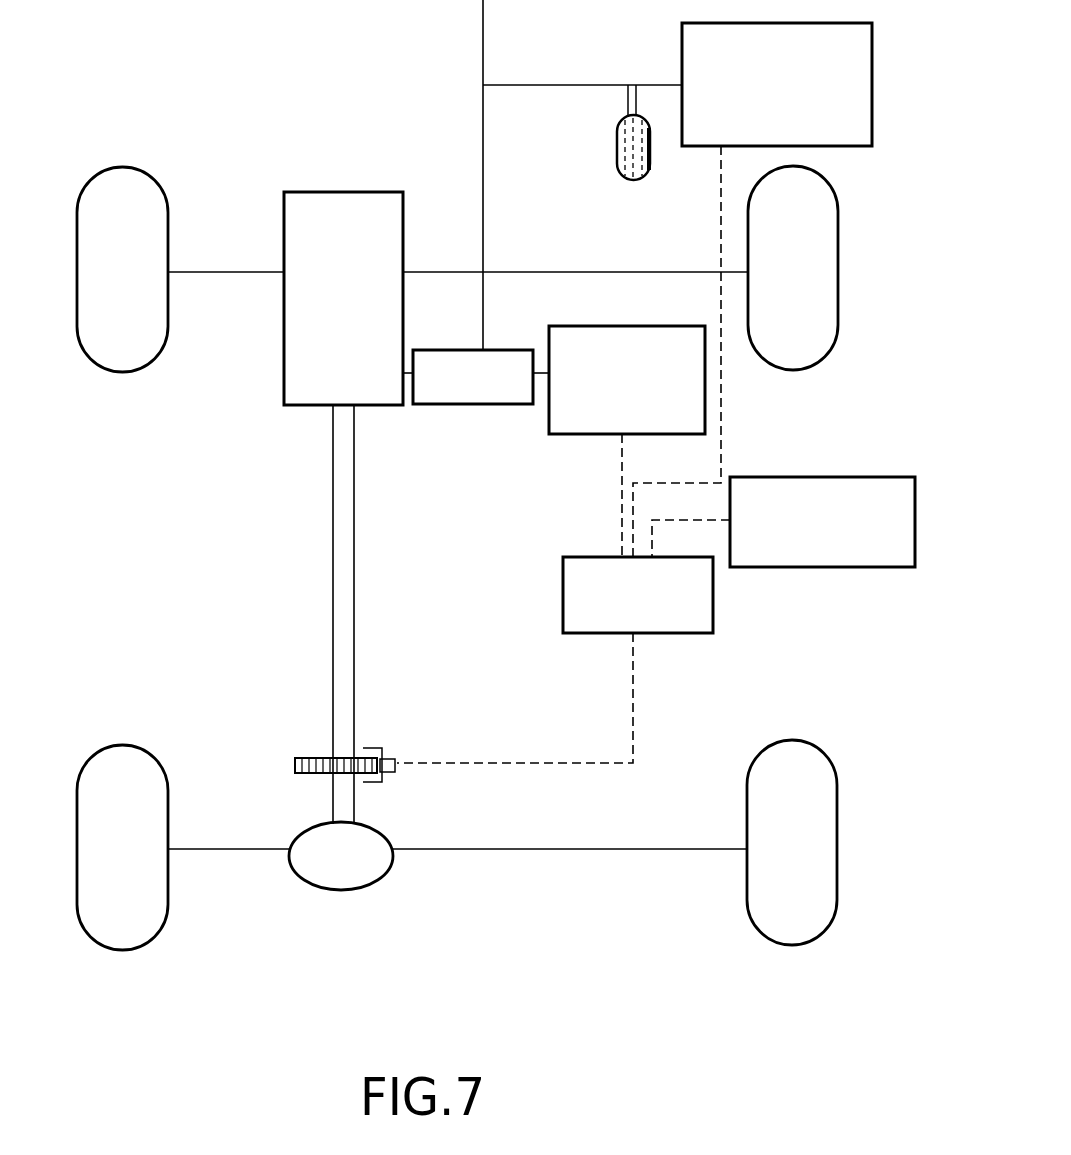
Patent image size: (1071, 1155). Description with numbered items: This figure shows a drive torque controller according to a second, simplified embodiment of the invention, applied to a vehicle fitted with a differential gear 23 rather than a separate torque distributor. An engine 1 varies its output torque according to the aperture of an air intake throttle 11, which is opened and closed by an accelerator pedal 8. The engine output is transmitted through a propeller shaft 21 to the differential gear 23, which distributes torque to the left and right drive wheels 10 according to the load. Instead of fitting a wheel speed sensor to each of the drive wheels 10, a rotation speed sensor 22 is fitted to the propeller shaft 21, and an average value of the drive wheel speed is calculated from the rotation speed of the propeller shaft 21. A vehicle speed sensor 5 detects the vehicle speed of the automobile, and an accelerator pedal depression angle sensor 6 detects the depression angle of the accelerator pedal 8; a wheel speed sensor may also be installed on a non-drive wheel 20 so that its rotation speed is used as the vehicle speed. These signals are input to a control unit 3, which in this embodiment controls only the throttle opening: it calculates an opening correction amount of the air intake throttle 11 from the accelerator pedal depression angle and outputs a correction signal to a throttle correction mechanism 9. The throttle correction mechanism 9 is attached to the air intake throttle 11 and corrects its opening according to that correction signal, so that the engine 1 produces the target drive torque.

The engine 1 is at (284, 325).
The control unit 3 is at (693, 633).
The vehicle speed sensor 5 is at (825, 477).
The accelerator pedal depression angle sensor 6 is at (835, 146).
The accelerator pedal 8 is at (617, 142).
The throttle correction mechanism 9 is at (572, 434).
The drive wheels 10 is at (837, 815).
The air intake throttle 11 is at (475, 404).
The non-drive wheel 20 is at (838, 275).
The propeller shaft 21 is at (333, 573).
The rotation speed sensor 22 is at (317, 757).
The differential gear 23 is at (343, 889).